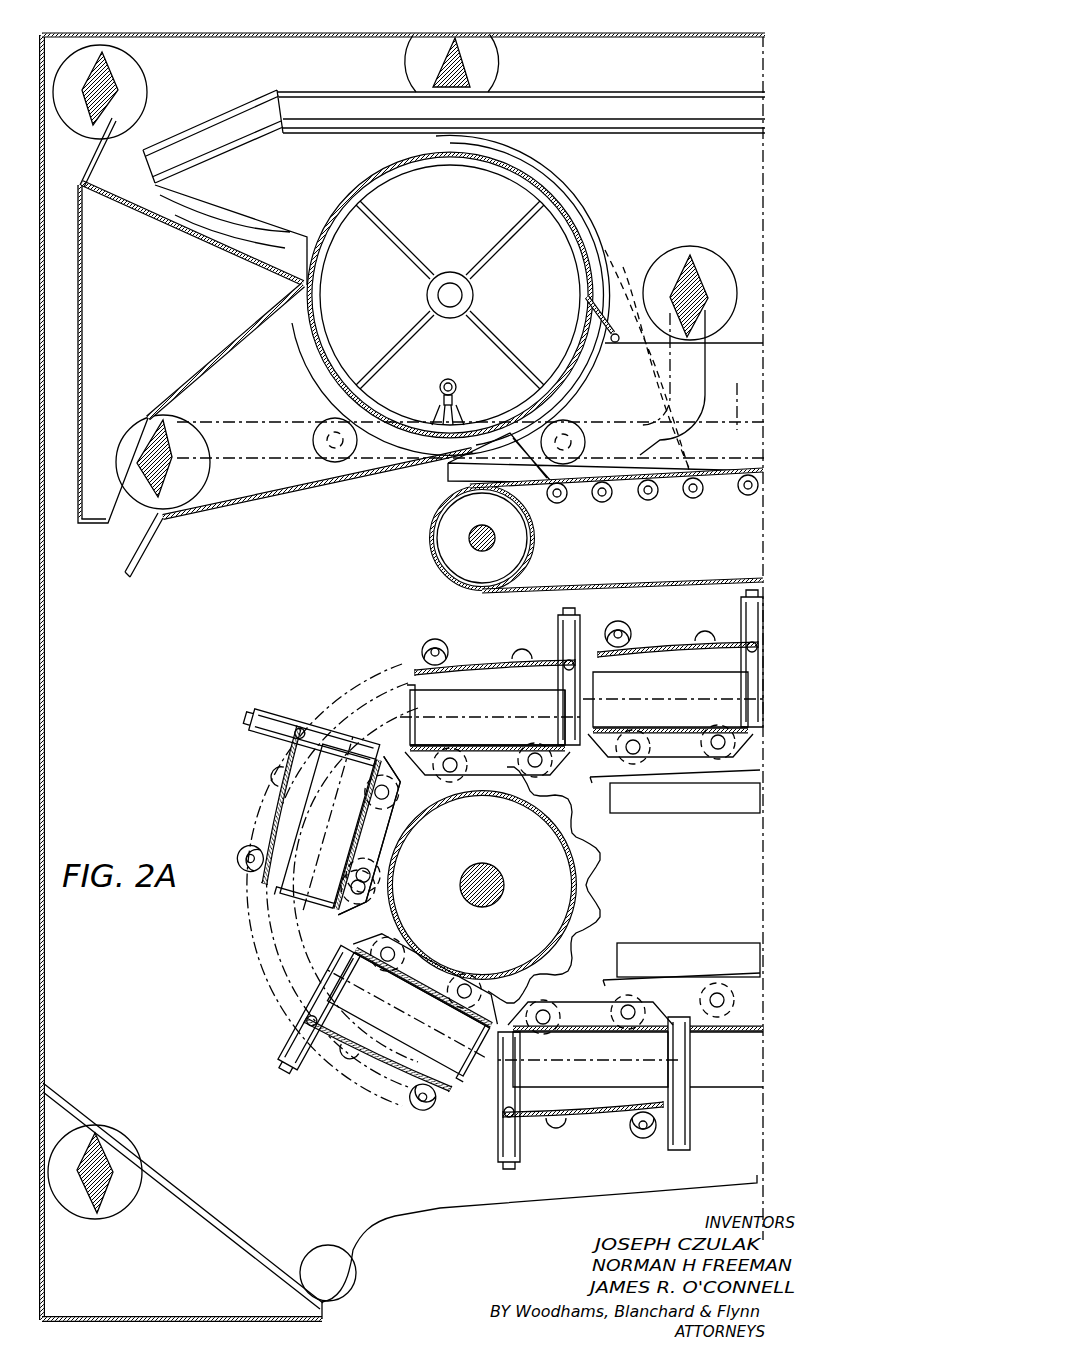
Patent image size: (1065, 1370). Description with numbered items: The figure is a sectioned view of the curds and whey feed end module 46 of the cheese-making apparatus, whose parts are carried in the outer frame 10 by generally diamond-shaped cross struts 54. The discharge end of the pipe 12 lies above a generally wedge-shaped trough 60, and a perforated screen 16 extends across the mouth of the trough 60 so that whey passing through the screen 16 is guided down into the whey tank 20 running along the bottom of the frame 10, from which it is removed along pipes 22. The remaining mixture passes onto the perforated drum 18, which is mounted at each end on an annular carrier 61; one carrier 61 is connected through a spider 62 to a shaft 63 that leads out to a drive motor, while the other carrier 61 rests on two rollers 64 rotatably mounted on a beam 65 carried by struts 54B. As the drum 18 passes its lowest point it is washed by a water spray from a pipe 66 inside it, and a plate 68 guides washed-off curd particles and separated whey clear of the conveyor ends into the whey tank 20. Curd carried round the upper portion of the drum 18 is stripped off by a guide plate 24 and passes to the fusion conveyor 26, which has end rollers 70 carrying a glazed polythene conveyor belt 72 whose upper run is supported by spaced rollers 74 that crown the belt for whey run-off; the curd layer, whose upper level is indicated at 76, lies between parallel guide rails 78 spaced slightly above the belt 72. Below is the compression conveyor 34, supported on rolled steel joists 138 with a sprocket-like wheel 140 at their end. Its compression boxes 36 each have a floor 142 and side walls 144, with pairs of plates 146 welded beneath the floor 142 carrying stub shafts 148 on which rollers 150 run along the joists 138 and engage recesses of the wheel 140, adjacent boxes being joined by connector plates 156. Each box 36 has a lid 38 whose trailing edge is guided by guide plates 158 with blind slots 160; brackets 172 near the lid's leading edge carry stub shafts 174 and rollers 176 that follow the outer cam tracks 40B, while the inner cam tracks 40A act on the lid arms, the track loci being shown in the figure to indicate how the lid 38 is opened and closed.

The outer frame 10 is at (43, 678).
The pipe 12 is at (618, 108).
The perforated screen 16 is at (187, 233).
The perforated drum 18 is at (400, 172).
The whey tank 20 is at (198, 1205).
The pipe 22 is at (327, 1253).
The guide plate 24 is at (605, 292).
The fusion conveyor 26 is at (432, 560).
The second conveyor 34 is at (460, 640).
The compression box 36 is at (673, 720).
The lid 38 is at (658, 665).
The inner set of cam tracks 40A is at (300, 933).
The outer set of cam tracks 40B is at (278, 967).
The curds and whey feed end module 46 is at (125, 671).
The cross strut 54 is at (105, 82).
The strut 54B is at (693, 267).
The wedge-shaped trough 60 is at (83, 273).
The annular carrier 61 is at (567, 180).
The spider 62 is at (505, 237).
The shaft 63 is at (450, 283).
The roller 64 is at (323, 423).
The beam 65 is at (243, 420).
The pipe 66 is at (447, 378).
The plate 68 is at (198, 510).
The end roller 70 is at (430, 530).
The conveyor belt 72 is at (693, 580).
The roller 74 is at (692, 498).
The upper level of curd layer 76 is at (738, 430).
The guide rail 78 is at (757, 347).
The rolled steel joist 138 is at (693, 797).
The sprocket-like wheel 140 is at (531, 885).
The floor 142 is at (483, 733).
The side wall 144 is at (572, 708).
The plate 146 is at (373, 853).
The stub shaft 148 is at (627, 763).
The roller 150 is at (712, 760).
The connector plate 156 is at (372, 913).
The guide plate 158 is at (743, 602).
The blind slot 160 is at (742, 620).
The bracket 172 is at (455, 662).
The stub shaft 174 is at (440, 645).
The roller 176 is at (620, 637).